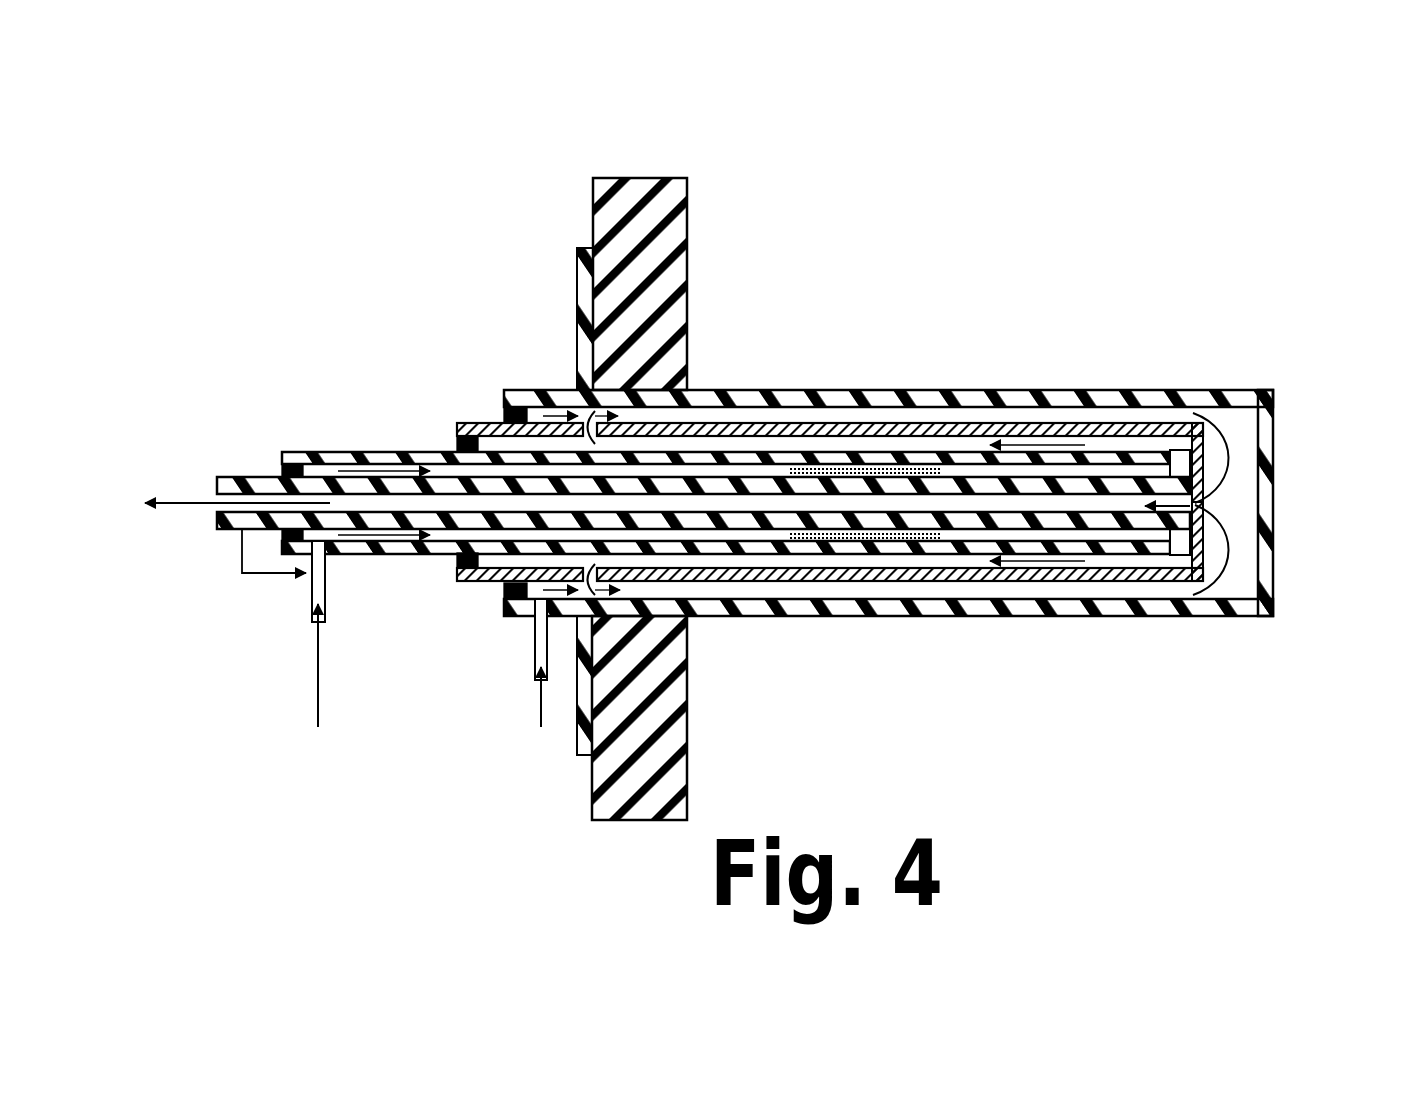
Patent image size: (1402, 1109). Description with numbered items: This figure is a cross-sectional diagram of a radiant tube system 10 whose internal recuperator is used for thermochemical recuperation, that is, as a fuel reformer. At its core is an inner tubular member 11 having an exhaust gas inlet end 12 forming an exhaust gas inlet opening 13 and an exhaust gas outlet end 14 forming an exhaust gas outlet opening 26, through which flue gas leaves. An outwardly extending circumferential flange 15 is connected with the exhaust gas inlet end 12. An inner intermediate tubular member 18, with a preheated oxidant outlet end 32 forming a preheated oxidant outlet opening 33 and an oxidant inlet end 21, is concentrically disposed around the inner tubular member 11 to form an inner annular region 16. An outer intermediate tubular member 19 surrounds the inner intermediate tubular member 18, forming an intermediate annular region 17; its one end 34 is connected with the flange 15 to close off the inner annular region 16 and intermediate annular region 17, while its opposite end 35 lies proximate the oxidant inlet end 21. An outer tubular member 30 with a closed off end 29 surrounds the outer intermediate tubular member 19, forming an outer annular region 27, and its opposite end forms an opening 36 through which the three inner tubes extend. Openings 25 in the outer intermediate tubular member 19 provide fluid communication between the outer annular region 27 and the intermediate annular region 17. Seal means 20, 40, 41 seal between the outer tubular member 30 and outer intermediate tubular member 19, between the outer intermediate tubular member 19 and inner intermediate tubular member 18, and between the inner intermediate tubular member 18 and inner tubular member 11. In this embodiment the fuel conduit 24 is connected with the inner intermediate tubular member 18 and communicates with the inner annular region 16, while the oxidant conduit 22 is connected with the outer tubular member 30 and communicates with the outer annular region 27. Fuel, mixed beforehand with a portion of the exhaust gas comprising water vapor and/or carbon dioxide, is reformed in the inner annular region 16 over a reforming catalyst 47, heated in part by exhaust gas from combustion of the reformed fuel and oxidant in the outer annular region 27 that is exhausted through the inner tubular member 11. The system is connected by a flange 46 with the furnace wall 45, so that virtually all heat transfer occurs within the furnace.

The radiant tube system 10 is at (1008, 306).
The inner tubular member 11 is at (913, 394).
The exhaust gas inlet end 12 is at (1150, 562).
The exhaust gas inlet opening 13 is at (1150, 485).
The exhaust gas outlet end 14 is at (210, 476).
The outwardly extending circumferential flange 15 is at (1188, 418).
The inner annular region 16 is at (962, 560).
The intermediate annular region 17 is at (800, 556).
The inner intermediate tubular member 18 is at (826, 422).
The outer intermediate tubular member 19 is at (737, 390).
The seal means 20 is at (498, 405).
The oxidant inlet end 21 is at (308, 543).
The oxidant conduit 22 is at (532, 662).
The fuel conduit 24 is at (330, 592).
The openings 25 is at (548, 390).
The exhaust gas outlet opening 26 is at (228, 480).
The outer annular region 27 is at (1068, 594).
The closed off end 29 is at (1275, 540).
The outer tubular member 30 is at (1043, 390).
The preheated oxidant outlet end 32 is at (1168, 468).
The preheated oxidant outlet opening 33 is at (1168, 537).
The one end of outer intermediate tubular member 34 is at (1207, 393).
The opposite end of outer intermediate tubular member 35 is at (455, 437).
The opening 36 is at (483, 423).
The seal means 40 is at (455, 447).
The seal means 41 is at (300, 538).
The furnace wall 45 is at (592, 232).
The flange 46 is at (577, 755).
The reforming catalyst 47 is at (863, 540).